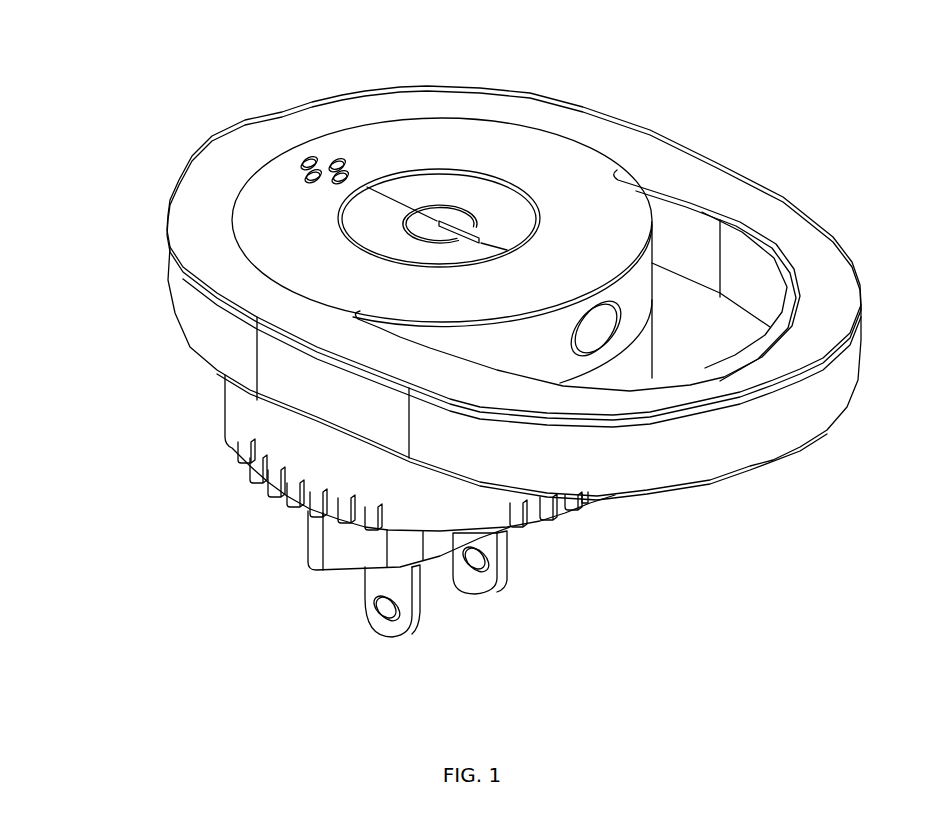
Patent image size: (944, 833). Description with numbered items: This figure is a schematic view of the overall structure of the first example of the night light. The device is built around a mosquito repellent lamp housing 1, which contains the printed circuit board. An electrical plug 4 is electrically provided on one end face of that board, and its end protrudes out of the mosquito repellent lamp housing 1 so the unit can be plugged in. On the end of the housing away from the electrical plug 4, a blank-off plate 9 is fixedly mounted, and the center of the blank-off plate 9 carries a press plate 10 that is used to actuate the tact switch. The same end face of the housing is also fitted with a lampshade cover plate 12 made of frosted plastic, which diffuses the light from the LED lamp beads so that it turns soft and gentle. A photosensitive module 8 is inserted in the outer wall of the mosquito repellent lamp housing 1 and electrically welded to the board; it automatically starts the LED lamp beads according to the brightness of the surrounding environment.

The mosquito repellent lamp housing 1 is at (192, 307).
The electrical plug 4 is at (507, 571).
The photosensitive module 8 is at (603, 325).
The blank-off plate 9 is at (262, 198).
The press plate 10 is at (498, 192).
The lampshade cover plate 12 is at (428, 107).